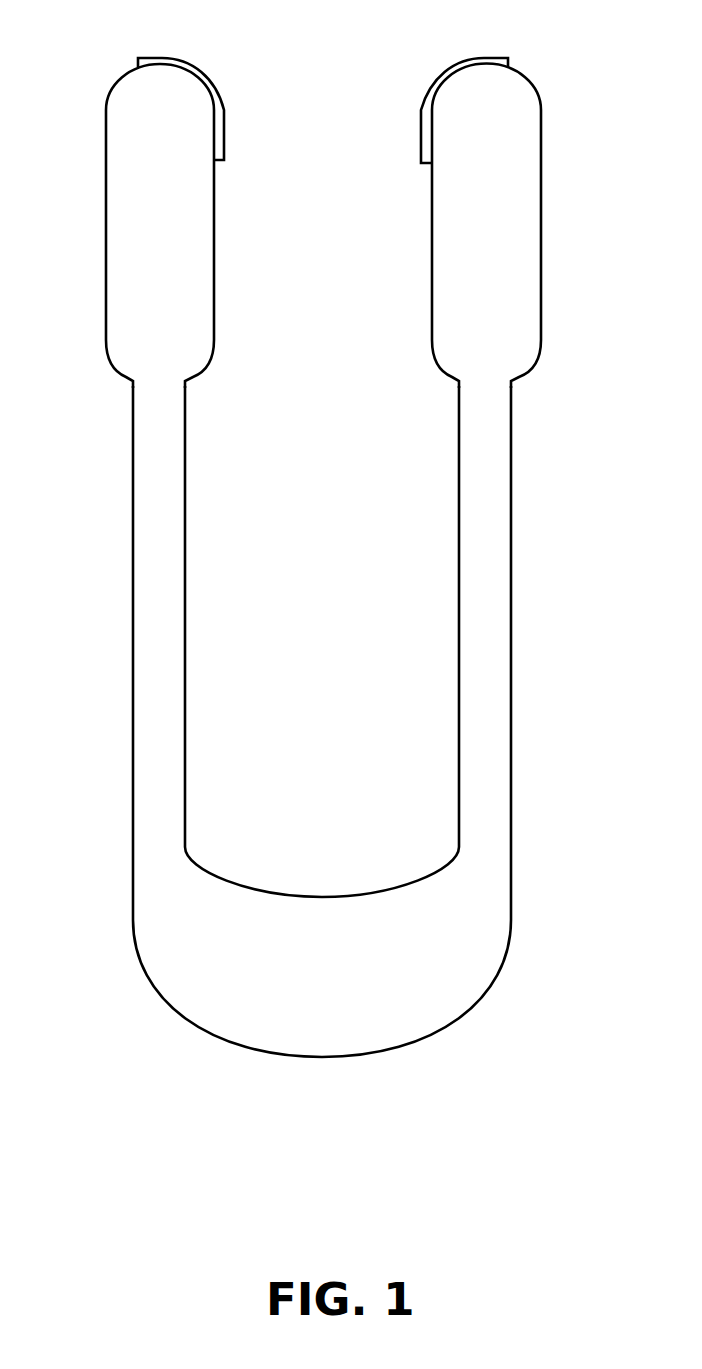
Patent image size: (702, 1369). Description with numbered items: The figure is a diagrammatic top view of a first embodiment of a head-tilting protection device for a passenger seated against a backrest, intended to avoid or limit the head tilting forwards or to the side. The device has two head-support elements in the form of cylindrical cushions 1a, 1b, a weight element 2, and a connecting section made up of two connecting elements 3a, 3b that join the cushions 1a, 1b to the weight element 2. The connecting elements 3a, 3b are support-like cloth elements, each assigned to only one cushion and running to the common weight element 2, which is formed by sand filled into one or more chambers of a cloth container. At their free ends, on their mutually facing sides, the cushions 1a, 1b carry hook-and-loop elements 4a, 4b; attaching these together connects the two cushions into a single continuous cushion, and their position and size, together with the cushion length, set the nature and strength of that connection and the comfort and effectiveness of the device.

The cushion 1a is at (122, 178).
The cushion 1b is at (522, 180).
The weight element 2 is at (433, 1015).
The connecting element 3a is at (148, 563).
The connecting element 3b is at (492, 563).
The hook-and-loop element 4a is at (166, 60).
The hook-and-loop element 4b is at (477, 62).